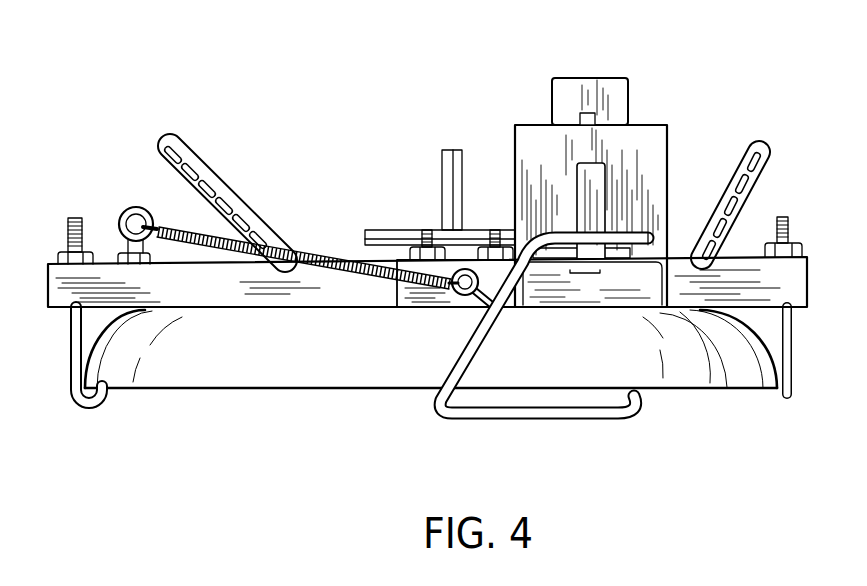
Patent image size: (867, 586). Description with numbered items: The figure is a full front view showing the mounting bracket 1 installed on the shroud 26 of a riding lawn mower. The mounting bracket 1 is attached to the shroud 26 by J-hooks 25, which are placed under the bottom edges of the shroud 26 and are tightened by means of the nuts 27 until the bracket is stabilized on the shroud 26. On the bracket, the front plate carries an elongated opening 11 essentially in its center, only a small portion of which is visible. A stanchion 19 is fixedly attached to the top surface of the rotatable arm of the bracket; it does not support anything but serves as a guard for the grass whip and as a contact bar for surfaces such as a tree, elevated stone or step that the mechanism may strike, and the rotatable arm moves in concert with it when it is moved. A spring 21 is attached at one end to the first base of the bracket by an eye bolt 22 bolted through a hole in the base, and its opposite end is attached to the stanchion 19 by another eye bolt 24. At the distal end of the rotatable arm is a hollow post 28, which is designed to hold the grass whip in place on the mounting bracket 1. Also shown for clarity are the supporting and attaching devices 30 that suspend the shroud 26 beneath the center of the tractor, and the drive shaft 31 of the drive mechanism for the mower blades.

The mounting bracket 1 is at (713, 79).
The elongated opening 11 is at (588, 112).
The stanchion 19 is at (543, 422).
The spring 21 is at (305, 250).
The eye bolt 22 is at (128, 211).
The eye bolt 24 is at (454, 300).
The J-hooks 25 is at (68, 368).
The shroud 26 is at (709, 376).
The nuts 27 is at (62, 251).
The hollow post 28 is at (597, 185).
The supporting and attaching devices 30 is at (173, 137).
The drive shaft 31 is at (443, 182).